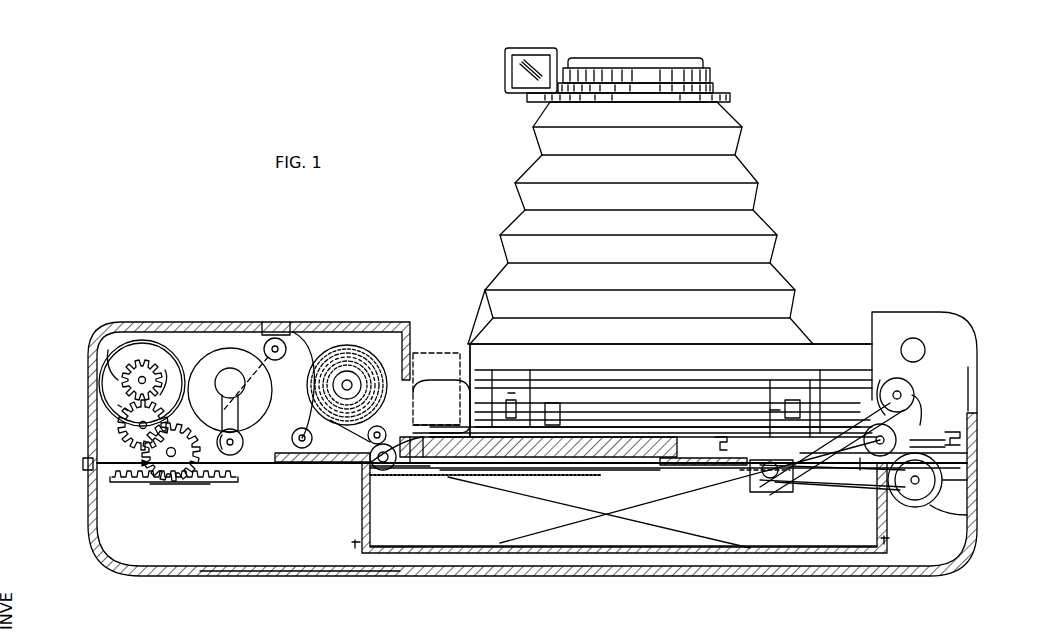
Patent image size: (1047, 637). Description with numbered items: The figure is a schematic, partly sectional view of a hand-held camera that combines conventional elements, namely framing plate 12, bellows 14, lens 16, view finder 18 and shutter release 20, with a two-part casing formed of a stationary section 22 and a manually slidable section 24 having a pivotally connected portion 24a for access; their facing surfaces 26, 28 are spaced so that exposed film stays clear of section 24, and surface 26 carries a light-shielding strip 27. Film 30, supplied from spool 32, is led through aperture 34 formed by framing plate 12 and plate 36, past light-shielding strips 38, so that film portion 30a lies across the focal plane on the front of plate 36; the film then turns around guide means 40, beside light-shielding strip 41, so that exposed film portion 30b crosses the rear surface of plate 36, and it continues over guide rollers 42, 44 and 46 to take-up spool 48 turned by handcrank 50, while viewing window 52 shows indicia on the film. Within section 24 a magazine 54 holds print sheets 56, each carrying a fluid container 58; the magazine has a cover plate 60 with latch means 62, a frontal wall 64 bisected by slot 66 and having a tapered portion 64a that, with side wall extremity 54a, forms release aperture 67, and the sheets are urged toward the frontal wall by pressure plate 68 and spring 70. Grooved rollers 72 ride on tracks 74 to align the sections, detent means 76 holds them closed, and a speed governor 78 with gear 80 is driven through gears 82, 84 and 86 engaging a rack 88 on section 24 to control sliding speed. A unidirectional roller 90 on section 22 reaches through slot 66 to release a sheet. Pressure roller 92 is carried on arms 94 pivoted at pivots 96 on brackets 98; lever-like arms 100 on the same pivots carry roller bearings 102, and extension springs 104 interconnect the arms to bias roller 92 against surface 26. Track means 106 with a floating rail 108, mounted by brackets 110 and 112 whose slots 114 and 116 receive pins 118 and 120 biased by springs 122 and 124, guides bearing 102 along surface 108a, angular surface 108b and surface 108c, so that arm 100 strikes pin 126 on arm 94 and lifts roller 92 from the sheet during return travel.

The framing plate 12 is at (418, 360).
The bellows 14 is at (515, 227).
The lens 16 is at (705, 68).
The view finder 18 is at (505, 75).
The shutter release 20 is at (908, 340).
The casing section 22 is at (125, 327).
The casing section 24 is at (88, 482).
The pivotally connected portion 24a is at (213, 572).
The facing surface 26 is at (955, 400).
The light-shielding strip 27 is at (960, 455).
The facing surface 28 is at (110, 487).
The film 30 is at (360, 352).
The film portion 30a is at (590, 420).
The film portion 30b is at (435, 470).
The spool 32 is at (362, 383).
The aperture 34 is at (418, 335).
The plate 36 is at (487, 460).
The light-shielding strips 38 is at (412, 470).
The guide means 40 is at (915, 398).
The light-shielding strip 41 is at (895, 435).
The guide roller 42 is at (370, 437).
The guide roller 44 is at (293, 432).
The guide roller 46 is at (264, 347).
The take-up spool 48 is at (214, 362).
The handcrank 50 is at (243, 450).
The viewing window 52 is at (288, 322).
The magazine 54 is at (362, 515).
The extremity of magazine side wall 54a is at (903, 505).
The sheets 56 is at (400, 478).
The fluid container 58 is at (868, 475).
The cover plate 60 is at (845, 553).
The latch means 62 is at (352, 545).
The frontal wall 64 is at (695, 490).
The tapered portion 64a is at (845, 487).
The slot 66 is at (562, 477).
The aperture 67 is at (960, 482).
The pressure plate 68 is at (540, 472).
The spring 70 is at (660, 515).
The grooved rollers 72 is at (962, 440).
The tracks 74 is at (960, 435).
The detent means 76 is at (83, 465).
The speed governor 78 is at (172, 342).
The gear 80 is at (110, 352).
The gear 82 is at (122, 452).
The gear 84 is at (118, 427).
The gear 86 is at (190, 480).
The rack 88 is at (163, 486).
The roller 90 is at (367, 463).
The pressure roller 92 is at (945, 505).
The arm 94 is at (850, 490).
The pivot 96 is at (765, 493).
The brackets 98 is at (735, 466).
The lever-like arm 100 is at (860, 395).
The roller bearing 102 is at (912, 385).
The extension spring 104 is at (805, 470).
The track means 106 is at (816, 360).
The floating rail 108 is at (700, 380).
The surface of floating rail 108a is at (650, 380).
The angular surface 108b is at (468, 395).
The surface of floating rail 108c is at (475, 345).
The bracket 110 is at (545, 380).
The bracket 112 is at (768, 345).
The slot 114 is at (540, 372).
The slot 116 is at (796, 345).
The pin 118 is at (527, 375).
The pin 120 is at (760, 372).
The spring 122 is at (512, 400).
The spring 124 is at (758, 378).
The pin 126 is at (760, 490).